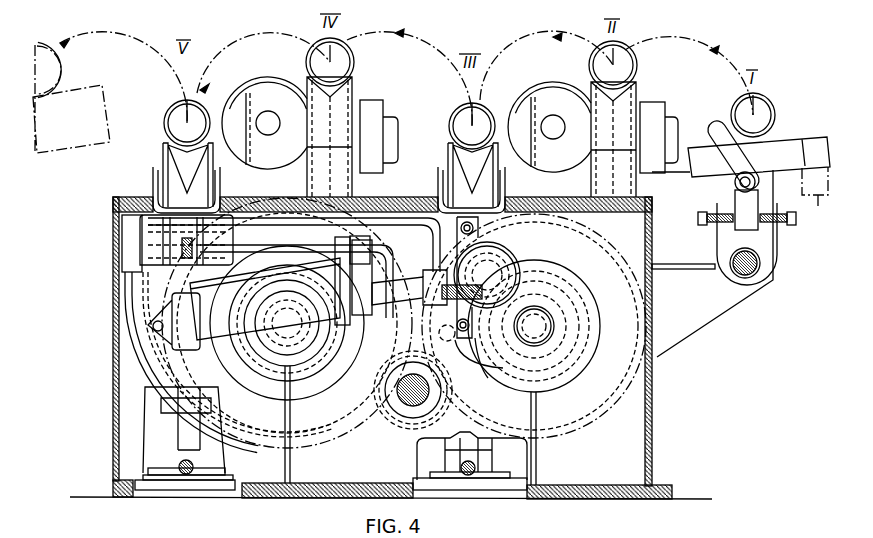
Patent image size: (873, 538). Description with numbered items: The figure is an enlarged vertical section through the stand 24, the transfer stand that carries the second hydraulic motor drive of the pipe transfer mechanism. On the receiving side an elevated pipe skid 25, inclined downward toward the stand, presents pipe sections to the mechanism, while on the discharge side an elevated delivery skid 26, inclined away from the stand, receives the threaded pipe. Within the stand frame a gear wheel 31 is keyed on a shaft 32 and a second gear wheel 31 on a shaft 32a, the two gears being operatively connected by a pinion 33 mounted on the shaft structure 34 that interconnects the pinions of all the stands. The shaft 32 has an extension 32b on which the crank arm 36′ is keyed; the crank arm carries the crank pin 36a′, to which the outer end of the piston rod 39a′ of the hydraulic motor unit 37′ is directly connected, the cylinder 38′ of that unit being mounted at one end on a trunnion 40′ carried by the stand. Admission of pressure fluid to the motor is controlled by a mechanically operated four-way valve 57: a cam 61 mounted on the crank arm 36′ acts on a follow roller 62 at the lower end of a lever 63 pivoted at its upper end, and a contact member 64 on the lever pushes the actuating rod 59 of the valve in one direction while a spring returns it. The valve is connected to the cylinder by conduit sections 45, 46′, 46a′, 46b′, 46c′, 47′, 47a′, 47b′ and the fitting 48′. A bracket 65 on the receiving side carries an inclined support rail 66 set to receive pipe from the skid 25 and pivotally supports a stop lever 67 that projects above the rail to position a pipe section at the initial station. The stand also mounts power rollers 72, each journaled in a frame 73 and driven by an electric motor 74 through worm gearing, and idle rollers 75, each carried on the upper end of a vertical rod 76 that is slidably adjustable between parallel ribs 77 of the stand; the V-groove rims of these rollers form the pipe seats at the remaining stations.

The stand 24 is at (112, 198).
The pipe skid 25 is at (815, 198).
The delivery skid 26 is at (78, 88).
The gear wheel 31 is at (310, 440).
The shaft 32 is at (536, 326).
The shaft 32a is at (287, 325).
The shaft extension 32b is at (536, 327).
The pinion 33 is at (390, 437).
The shaft structure 34 is at (413, 395).
The crank arm 36′ is at (545, 379).
The crank pin 36a′ is at (530, 260).
The hydraulic motor unit 37′ is at (237, 338).
The cylinder 38′ is at (213, 335).
The piston rod 39a′ is at (412, 268).
The trunnion 40′ is at (150, 326).
The gear 45 is at (437, 333).
The rod 46′ is at (385, 218).
The conduit section 46a′ is at (247, 217).
The conduit section 46b′ is at (257, 450).
The conduit section 46c′ is at (281, 288).
The conduit section 47′ is at (295, 255).
The conduit section 47a′ is at (285, 217).
The conduit section 47b′ is at (333, 430).
The fitting 48′ is at (122, 262).
The four-way valve 57 is at (456, 343).
The actuating rod 59 is at (483, 352).
The cam 61 is at (572, 276).
The follow roller 62 is at (488, 362).
The lever 63 is at (500, 252).
The contact member 64 is at (516, 330).
The bracket 65 is at (703, 322).
The support rail 66 is at (792, 148).
The stop lever 67 is at (724, 136).
The power roller 72 is at (348, 95).
The frame 73 is at (374, 115).
The electric motor 74 is at (258, 97).
The idle roller 75 is at (175, 158).
The vertical rod 76 is at (180, 224).
The rib 77 is at (167, 233).